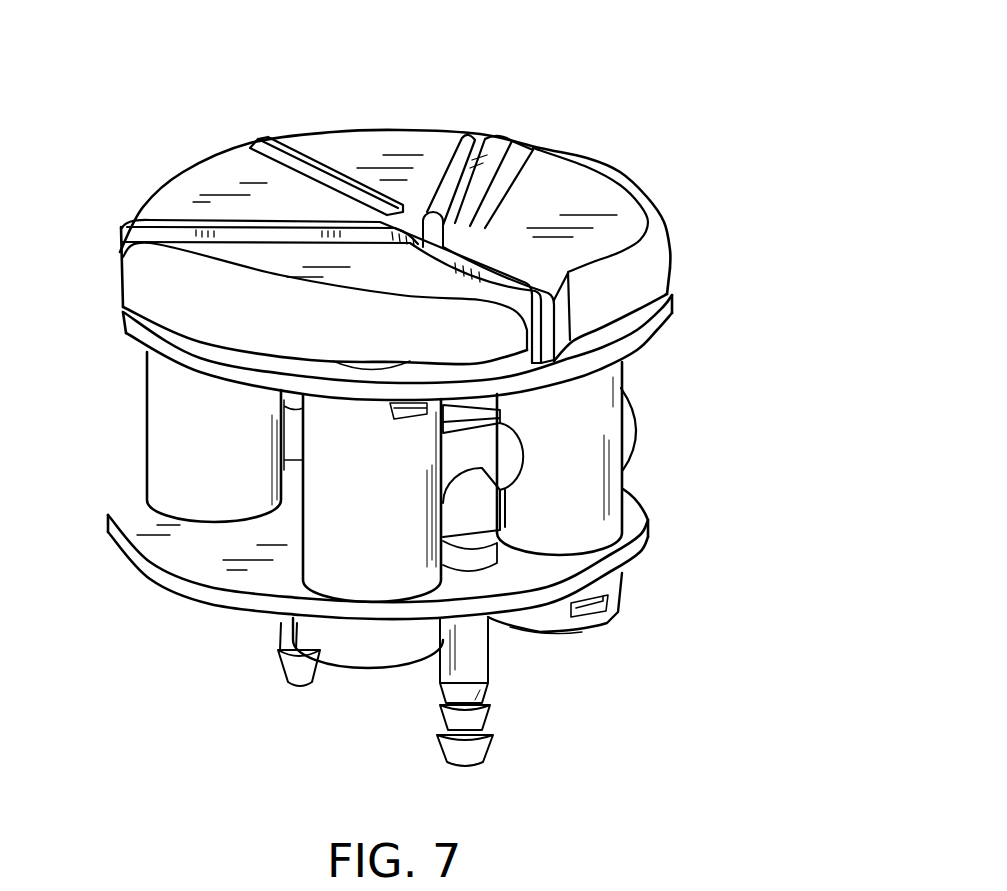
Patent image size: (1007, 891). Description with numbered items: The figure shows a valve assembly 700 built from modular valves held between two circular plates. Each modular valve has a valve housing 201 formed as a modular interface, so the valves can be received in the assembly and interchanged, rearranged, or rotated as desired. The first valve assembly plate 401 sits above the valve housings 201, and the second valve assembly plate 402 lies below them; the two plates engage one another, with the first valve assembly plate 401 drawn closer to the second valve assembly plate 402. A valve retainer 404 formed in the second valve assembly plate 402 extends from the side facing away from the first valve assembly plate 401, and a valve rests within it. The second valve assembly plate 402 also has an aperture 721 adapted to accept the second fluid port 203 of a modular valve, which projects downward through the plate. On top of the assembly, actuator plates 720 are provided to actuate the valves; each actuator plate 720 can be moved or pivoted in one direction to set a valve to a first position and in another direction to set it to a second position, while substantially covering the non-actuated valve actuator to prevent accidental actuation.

The valve assembly 700 is at (155, 99).
The actuator plates 720 is at (602, 183).
The first valve assembly plate 401 is at (648, 310).
The valve housing 201 is at (612, 396).
The aperture 721 is at (488, 538).
The second valve assembly plate 402 is at (188, 567).
The valve retainer 404 is at (380, 660).
The second fluid port 203 is at (283, 671).